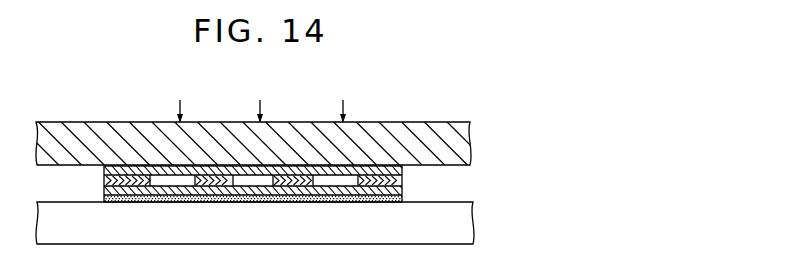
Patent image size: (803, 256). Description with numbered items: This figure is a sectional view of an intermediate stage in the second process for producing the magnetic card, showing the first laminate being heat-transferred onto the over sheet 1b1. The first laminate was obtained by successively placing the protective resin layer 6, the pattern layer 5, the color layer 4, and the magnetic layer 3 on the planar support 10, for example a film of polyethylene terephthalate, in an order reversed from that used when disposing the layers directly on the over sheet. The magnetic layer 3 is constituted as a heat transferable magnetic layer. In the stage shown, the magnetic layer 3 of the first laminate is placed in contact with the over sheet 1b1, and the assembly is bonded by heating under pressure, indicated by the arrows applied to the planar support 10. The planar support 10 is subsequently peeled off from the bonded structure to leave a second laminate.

The planar support 10 is at (443, 122).
The over sheet 1b1 is at (473, 224).
The color layer 4 is at (402, 189).
The pattern layer 5 is at (210, 182).
The protective resin layer 6 is at (301, 174).
The magnetic layer 3 is at (102, 198).